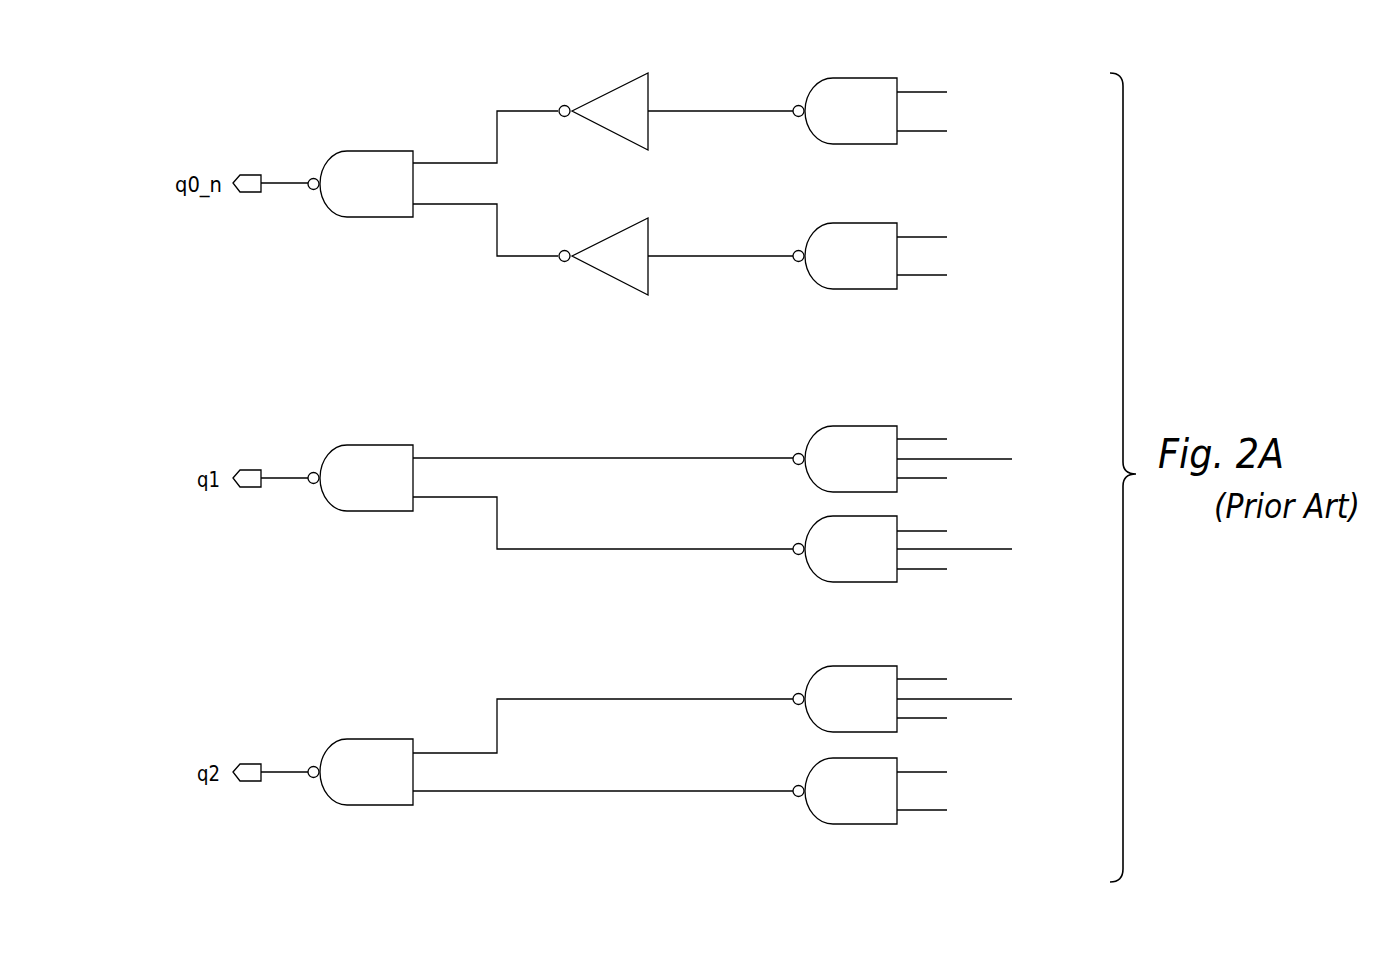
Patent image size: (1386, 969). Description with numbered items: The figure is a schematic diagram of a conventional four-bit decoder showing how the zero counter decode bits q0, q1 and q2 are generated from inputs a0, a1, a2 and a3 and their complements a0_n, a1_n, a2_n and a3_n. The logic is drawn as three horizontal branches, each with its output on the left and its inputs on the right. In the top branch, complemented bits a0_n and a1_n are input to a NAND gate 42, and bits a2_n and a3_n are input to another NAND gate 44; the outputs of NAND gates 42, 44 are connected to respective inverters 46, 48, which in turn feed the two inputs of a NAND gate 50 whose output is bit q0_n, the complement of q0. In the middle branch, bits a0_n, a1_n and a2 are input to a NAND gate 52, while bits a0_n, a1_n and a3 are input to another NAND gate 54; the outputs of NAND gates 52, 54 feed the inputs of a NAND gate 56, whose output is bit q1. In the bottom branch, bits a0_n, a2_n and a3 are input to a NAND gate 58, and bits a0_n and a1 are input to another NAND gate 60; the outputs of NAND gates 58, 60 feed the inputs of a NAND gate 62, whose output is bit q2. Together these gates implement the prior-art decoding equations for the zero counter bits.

The NAND gate 42 is at (872, 144).
The NAND gate 44 is at (872, 289).
The inverter 46 is at (607, 131).
The inverter 48 is at (607, 276).
The NAND gate 50 is at (390, 151).
The NAND gate 52 is at (873, 426).
The NAND gate 54 is at (843, 582).
The NAND gate 56 is at (390, 445).
The NAND gate 58 is at (885, 666).
The NAND gate 60 is at (872, 824).
The NAND gate 62 is at (390, 739).